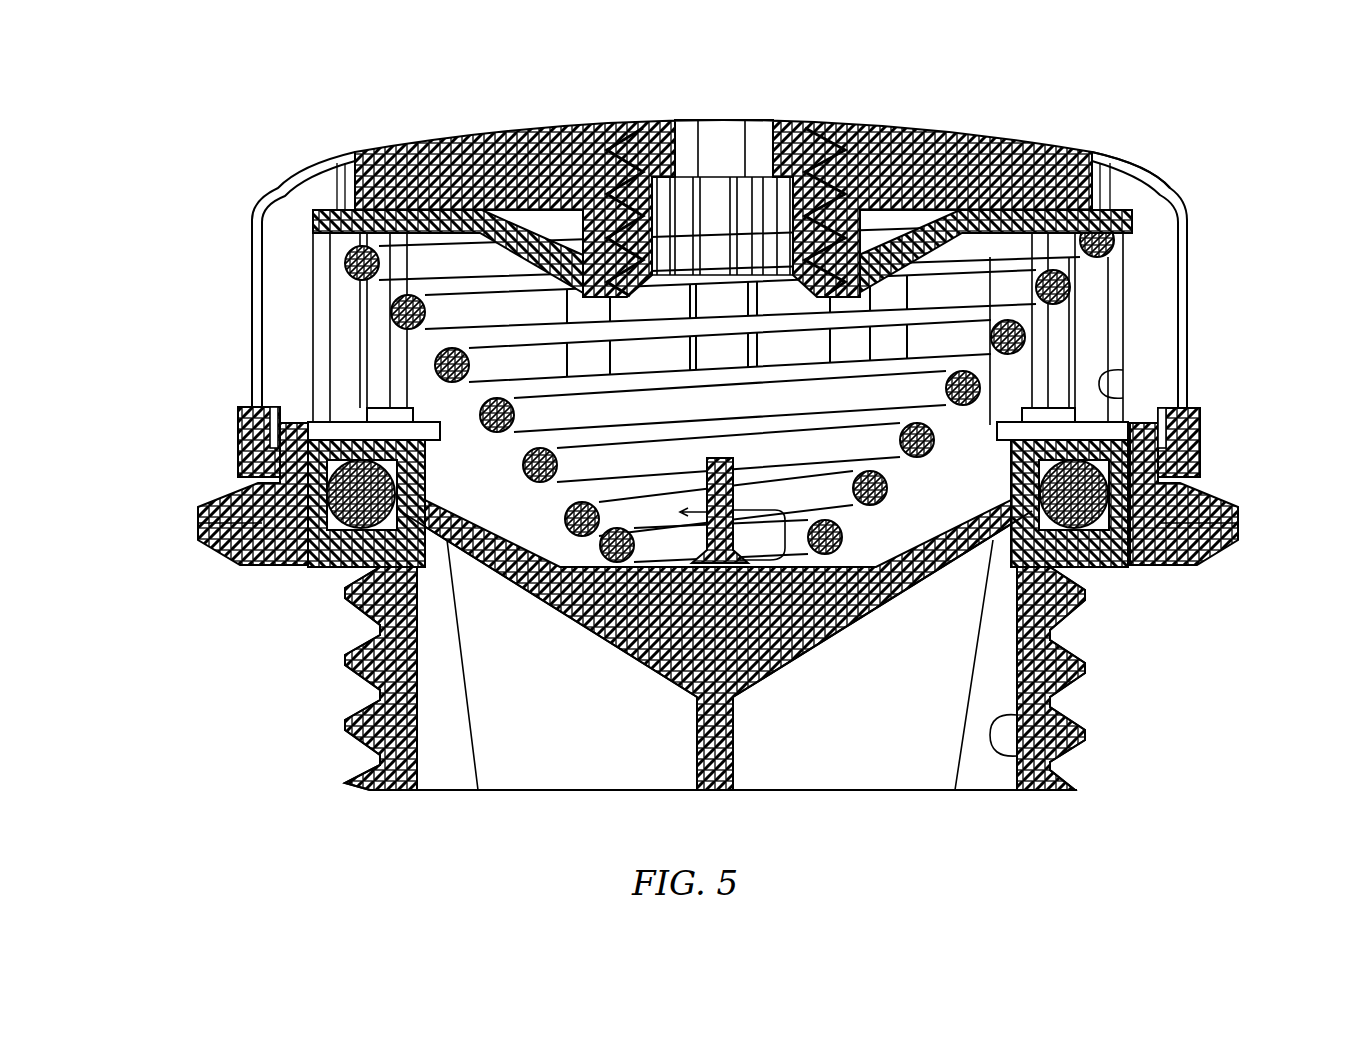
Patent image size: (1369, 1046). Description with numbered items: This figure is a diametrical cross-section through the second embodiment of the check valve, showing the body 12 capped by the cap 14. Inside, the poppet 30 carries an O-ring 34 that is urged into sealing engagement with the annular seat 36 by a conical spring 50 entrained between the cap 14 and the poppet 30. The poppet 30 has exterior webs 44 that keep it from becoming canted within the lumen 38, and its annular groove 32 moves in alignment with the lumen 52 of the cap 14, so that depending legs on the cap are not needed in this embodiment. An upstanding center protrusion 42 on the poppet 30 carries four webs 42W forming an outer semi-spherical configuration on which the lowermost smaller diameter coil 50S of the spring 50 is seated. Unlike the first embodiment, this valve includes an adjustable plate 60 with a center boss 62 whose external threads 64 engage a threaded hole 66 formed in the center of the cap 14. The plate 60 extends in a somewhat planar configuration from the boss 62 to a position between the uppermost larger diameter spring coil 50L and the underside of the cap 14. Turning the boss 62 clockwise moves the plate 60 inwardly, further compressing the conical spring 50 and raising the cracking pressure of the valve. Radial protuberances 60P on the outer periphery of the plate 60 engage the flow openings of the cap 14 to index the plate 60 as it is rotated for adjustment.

The body 12 is at (1210, 562).
The cap 14 is at (1122, 163).
The poppet 30 is at (1025, 615).
The annular groove 32 is at (280, 567).
The O-ring 34 is at (1237, 520).
The annular seat 36 is at (307, 567).
The lumen 38 is at (1052, 762).
The upstanding center protrusion 42 is at (585, 530).
The webs 42W is at (818, 628).
The exterior webs 44 is at (697, 755).
The conical spring 50 is at (1027, 348).
The uppermost larger diameter spring coil 50L is at (1110, 238).
The lowermost smaller diameter coil 50S is at (1043, 560).
The lumen 52 is at (1123, 395).
The adjustable plate 60 is at (1038, 127).
The radial protuberances 60P is at (260, 226).
The center boss 62 is at (793, 125).
The external threads 64 is at (868, 127).
The threaded hole 66 is at (902, 128).